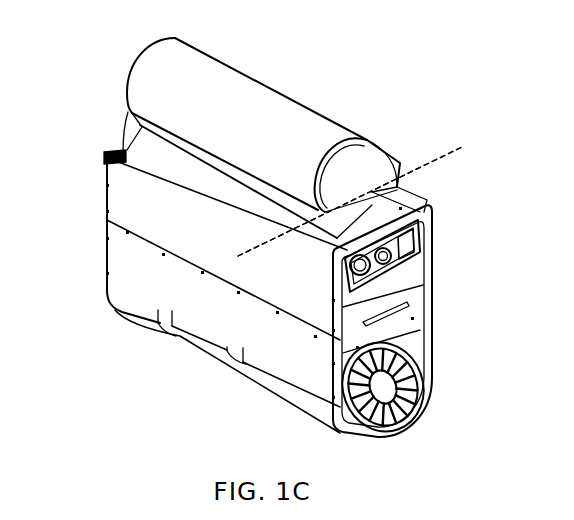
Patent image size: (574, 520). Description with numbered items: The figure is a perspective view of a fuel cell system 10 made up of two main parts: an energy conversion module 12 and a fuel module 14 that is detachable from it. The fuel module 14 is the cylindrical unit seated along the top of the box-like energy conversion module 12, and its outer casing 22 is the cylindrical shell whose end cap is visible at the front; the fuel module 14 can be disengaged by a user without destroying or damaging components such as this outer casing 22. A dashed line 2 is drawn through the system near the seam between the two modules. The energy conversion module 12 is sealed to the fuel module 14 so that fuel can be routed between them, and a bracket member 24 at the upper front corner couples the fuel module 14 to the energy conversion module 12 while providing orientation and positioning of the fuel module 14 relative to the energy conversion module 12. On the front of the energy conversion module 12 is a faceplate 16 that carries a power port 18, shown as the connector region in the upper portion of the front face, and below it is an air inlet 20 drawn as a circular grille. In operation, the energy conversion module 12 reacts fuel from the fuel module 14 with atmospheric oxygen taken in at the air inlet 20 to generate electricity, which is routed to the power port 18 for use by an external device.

The fuel cell system 10 is at (347, 92).
The longitudinal axis 2 is at (358, 197).
The energy conversion module 12 is at (141, 227).
The fuel module 14 is at (157, 92).
The faceplate 16 is at (396, 247).
The power port 18 is at (347, 279).
The air inlet 20 is at (427, 383).
The outer casing 22 is at (323, 143).
The bracket member 24 is at (407, 188).